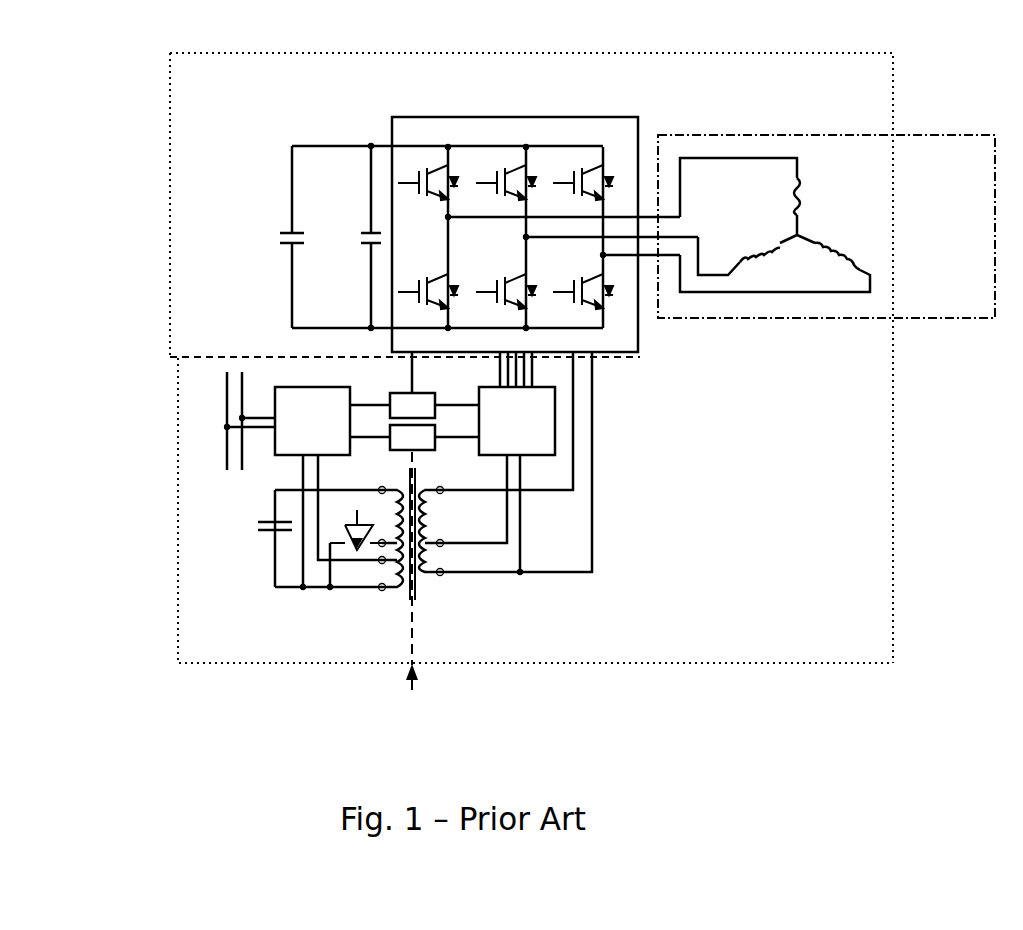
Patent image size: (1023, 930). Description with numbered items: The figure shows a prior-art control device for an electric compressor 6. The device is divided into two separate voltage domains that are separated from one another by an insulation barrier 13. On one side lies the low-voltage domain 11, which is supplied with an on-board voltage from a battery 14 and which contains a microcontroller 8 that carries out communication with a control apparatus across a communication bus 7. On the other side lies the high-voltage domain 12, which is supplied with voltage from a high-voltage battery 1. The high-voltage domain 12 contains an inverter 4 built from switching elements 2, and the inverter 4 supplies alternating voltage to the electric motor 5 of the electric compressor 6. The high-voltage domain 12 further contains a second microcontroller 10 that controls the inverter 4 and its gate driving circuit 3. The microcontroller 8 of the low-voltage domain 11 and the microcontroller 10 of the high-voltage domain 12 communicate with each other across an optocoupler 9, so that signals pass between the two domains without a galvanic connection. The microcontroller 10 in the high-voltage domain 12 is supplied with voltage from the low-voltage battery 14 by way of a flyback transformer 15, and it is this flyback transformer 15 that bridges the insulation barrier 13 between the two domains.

The high-voltage battery 1 is at (290, 238).
The switching elements 2 is at (513, 156).
The gate driving circuit 3 is at (416, 158).
The inverter 4 is at (617, 117).
The electric motor 5 is at (797, 148).
The electric compressor 6 is at (826, 187).
The communication bus 7 is at (225, 400).
The microcontroller 8 is at (275, 455).
The optocoupler 9 is at (390, 428).
The microcontroller 10 is at (556, 415).
The low-voltage domain 11 is at (192, 630).
The high-voltage domain 12 is at (858, 606).
The insulation barrier 13 is at (412, 586).
The battery 14 is at (275, 530).
The flyback transformer 15 is at (430, 590).